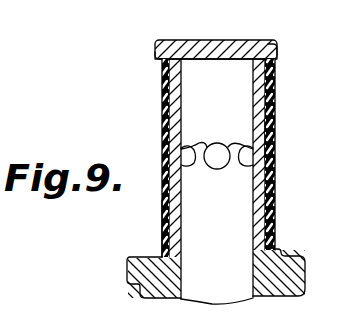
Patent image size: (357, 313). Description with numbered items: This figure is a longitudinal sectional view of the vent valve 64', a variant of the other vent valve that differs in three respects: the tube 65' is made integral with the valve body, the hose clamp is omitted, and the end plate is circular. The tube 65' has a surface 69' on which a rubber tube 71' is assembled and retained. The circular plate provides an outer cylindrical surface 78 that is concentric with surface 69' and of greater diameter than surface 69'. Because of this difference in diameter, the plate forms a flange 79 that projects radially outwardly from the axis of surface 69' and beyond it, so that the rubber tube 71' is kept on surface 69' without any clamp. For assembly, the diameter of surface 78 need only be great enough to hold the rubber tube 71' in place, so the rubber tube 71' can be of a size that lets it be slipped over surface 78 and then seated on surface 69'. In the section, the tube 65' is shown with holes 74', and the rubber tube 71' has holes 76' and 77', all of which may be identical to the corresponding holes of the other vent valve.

The vent valve 64' is at (207, 154).
The tube 65' is at (224, 31).
The outer cylindrical surface 78 is at (158, 59).
The flange 79 is at (281, 59).
The holes 76' is at (218, 179).
The rubber tube 71' is at (303, 140).
The holes 77' is at (219, 160).
The surface 69' is at (145, 228).
The holes 74' is at (217, 140).